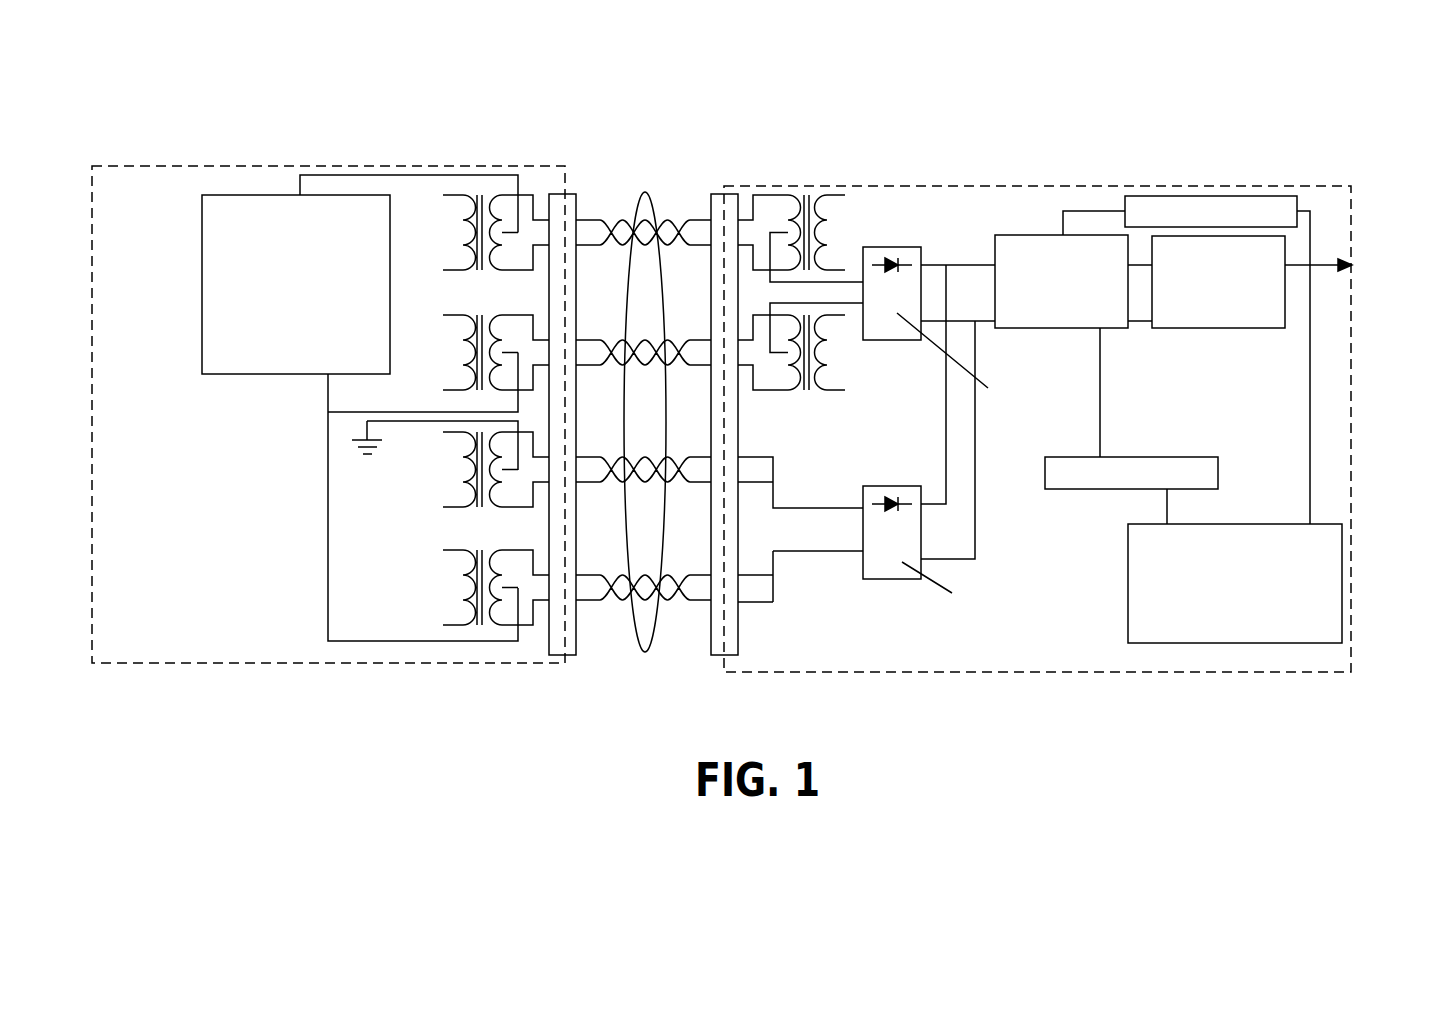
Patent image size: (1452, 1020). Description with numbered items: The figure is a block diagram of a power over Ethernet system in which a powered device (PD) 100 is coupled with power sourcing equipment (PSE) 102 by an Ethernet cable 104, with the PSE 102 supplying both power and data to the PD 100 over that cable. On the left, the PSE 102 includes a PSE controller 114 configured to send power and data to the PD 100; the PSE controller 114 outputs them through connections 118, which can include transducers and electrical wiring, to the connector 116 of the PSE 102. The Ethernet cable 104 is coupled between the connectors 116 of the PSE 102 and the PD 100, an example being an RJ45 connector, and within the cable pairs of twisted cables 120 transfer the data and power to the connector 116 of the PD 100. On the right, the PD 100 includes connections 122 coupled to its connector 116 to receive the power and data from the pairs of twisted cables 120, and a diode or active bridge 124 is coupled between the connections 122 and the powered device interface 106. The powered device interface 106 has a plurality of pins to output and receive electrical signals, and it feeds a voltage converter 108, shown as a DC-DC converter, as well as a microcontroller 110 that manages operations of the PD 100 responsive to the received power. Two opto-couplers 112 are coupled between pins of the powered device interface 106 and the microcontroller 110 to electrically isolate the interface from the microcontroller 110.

The powered device 100 is at (868, 186).
The power sourcing equipment 102 is at (455, 165).
The Ethernet cable 104 is at (645, 193).
The powered device interface 106 is at (1035, 235).
The voltage converter 108 is at (1285, 248).
The microcontroller 110 is at (1290, 643).
The opto-coupler 112 is at (1262, 196).
The PSE controller 114 is at (280, 308).
The connector 116 is at (565, 194).
The connections 118 is at (495, 648).
The pairs of twisted cables 120 is at (603, 616).
The connections 122 is at (805, 596).
The diode or active bridge 124 is at (876, 309).